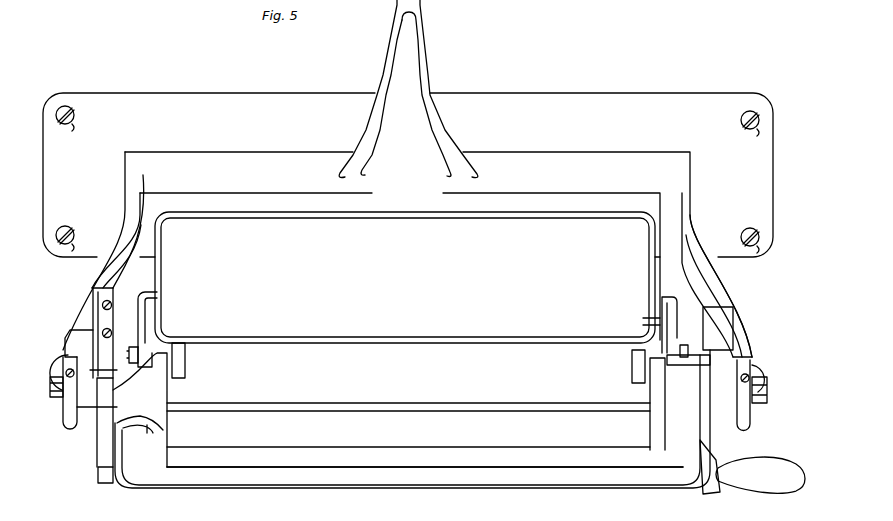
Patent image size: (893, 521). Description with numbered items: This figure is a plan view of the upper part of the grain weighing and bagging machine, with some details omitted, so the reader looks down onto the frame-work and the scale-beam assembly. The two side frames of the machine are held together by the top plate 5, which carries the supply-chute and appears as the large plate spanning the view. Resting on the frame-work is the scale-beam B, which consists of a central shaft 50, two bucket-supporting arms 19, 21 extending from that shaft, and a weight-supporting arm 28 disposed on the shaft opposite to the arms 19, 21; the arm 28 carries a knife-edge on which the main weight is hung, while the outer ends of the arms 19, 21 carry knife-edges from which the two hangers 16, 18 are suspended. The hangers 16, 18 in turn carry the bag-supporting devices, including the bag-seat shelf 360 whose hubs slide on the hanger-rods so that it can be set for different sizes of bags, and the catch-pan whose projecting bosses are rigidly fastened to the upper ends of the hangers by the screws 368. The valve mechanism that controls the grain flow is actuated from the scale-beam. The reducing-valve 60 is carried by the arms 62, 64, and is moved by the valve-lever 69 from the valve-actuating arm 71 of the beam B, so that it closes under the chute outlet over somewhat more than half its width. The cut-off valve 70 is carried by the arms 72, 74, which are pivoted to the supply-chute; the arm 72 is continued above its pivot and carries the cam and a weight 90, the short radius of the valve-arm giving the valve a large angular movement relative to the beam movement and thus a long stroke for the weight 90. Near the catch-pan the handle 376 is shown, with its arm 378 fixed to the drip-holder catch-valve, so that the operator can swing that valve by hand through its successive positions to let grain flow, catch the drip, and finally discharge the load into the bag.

The top plate 5 is at (541, 104).
The weight-supporting arm 28 is at (423, 53).
The central shaft 50 is at (522, 168).
The scale-beam B is at (595, 148).
The bucket-supporting arm 21 is at (97, 268).
The bucket-supporting arm 19 is at (723, 283).
The arm 74 is at (142, 323).
The arm 64 is at (157, 388).
The valve-lever 69 is at (102, 445).
The valve-actuating arm 71 is at (98, 482).
The hanger 18 is at (70, 413).
The reducing-valve 60 is at (287, 473).
The shelf 360 is at (541, 478).
The arm 62 is at (655, 393).
The cut-off valve 70 is at (668, 310).
The arm 72 is at (672, 322).
The weight 90 is at (715, 320).
The hanger 16 is at (745, 412).
The screws 368 is at (760, 382).
The arm 378 is at (710, 460).
The handle 376 is at (770, 477).